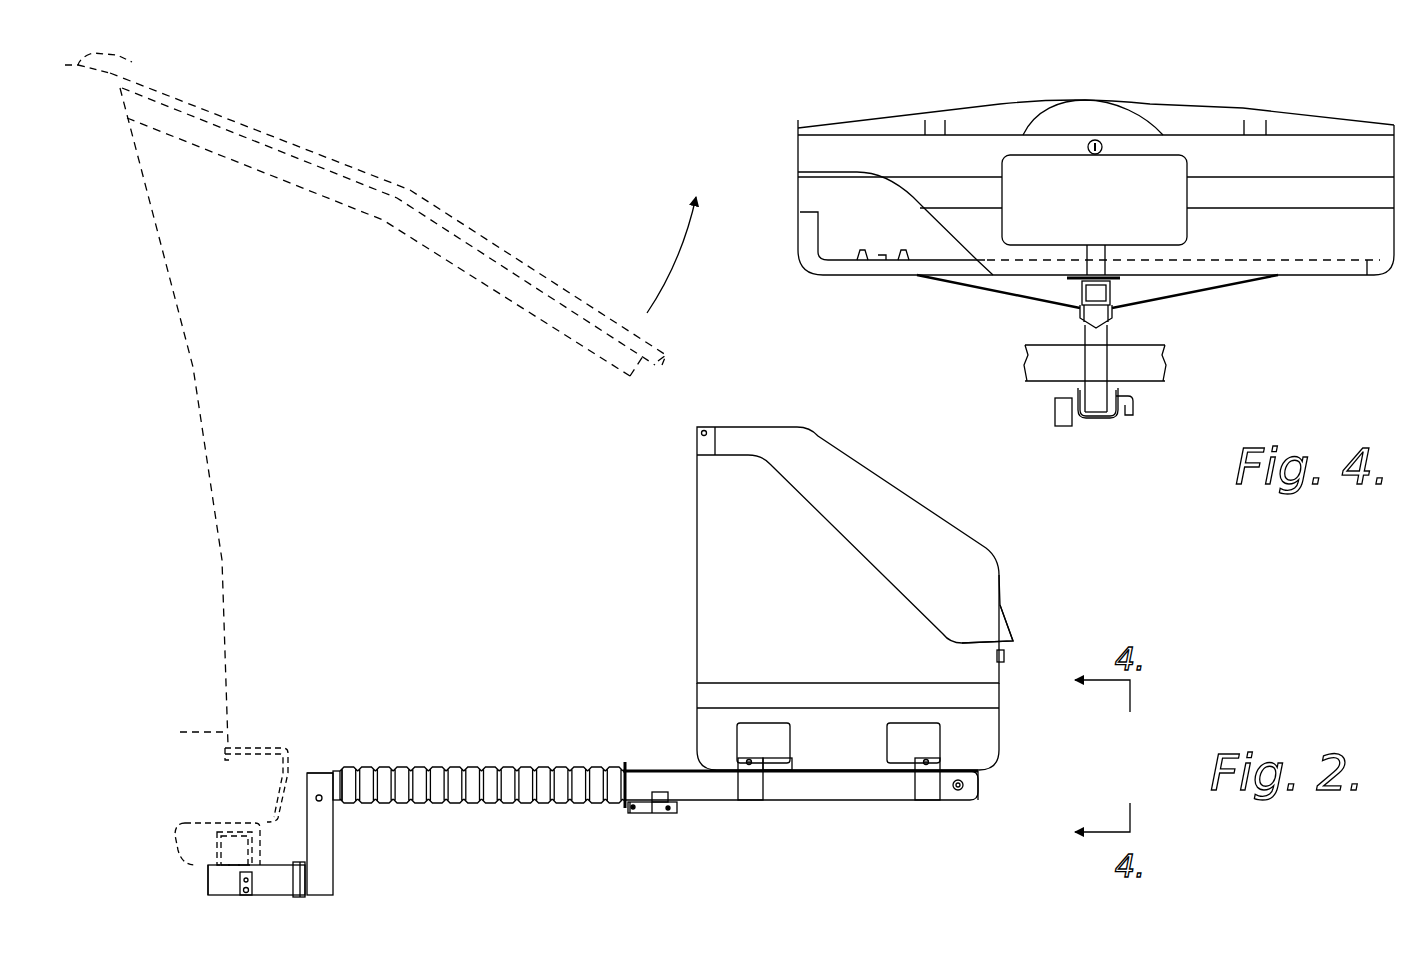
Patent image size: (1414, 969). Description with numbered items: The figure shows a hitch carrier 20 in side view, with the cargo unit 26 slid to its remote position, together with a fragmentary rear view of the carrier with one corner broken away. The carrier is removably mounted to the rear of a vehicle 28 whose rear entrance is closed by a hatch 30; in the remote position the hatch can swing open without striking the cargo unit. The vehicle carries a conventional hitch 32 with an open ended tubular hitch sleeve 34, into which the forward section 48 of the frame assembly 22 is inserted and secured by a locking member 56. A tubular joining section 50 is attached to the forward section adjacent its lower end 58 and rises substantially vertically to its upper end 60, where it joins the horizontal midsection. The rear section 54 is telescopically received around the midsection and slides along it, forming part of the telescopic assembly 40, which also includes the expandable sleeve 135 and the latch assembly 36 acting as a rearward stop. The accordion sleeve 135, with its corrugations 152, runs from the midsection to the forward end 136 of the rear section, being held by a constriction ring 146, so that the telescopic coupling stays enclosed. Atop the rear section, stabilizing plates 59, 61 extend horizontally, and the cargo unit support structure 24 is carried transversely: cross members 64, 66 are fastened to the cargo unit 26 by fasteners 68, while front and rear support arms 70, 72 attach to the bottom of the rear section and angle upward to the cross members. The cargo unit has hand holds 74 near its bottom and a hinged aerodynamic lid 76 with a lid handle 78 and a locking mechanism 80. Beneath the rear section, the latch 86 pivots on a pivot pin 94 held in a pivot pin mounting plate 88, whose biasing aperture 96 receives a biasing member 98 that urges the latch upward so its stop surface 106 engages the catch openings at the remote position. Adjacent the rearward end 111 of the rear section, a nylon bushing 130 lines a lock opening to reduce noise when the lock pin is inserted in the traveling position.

In FIG. 2, the hitch carrier 20 is at (618, 630).
In FIG. 2, the frame assembly 22 is at (305, 700).
In FIG. 4, the frame assembly 22 is at (1000, 360).
In FIG. 4, the cargo unit support structure 24 is at (935, 292).
In FIG. 2, the cargo unit 26 is at (848, 598).
In FIG. 4, the cargo unit 26 is at (1096, 197).
In FIG. 2, the vehicle 28 is at (128, 60).
In FIG. 2, the hatch 30 is at (413, 195).
In FIG. 2, the hitch 32 is at (178, 808).
In FIG. 2, the hitch sleeve 34 is at (213, 895).
In FIG. 4, the hitch sleeve 34 is at (1112, 425).
In FIG. 2, the latch assembly 36 is at (590, 875).
In FIG. 2, the telescopic assembly 40 is at (556, 735).
In FIG. 2, the forward section 48 is at (305, 895).
In FIG. 2, the joining section 50 is at (322, 850).
In FIG. 4, the joining section 50 is at (1100, 362).
In FIG. 2, the rear section 54 is at (875, 793).
In FIG. 2, the locking member 56 is at (247, 895).
In FIG. 4, the locking member 56 is at (1055, 412).
In FIG. 2, the lower end 58 is at (325, 885).
In FIG. 4, the lower end 58 is at (1100, 392).
In FIG. 4, the stabilizing plate 59 is at (1072, 290).
In FIG. 2, the upper end 60 is at (313, 775).
In FIG. 4, the stabilizing plate 61 is at (1112, 290).
In FIG. 2, the cross member 64 is at (770, 762).
In FIG. 2, the cross member 66 is at (907, 762).
In FIG. 4, the cross member 66 is at (855, 272).
In FIG. 2, the fasteners 68 is at (750, 763).
In FIG. 4, the fasteners 68 is at (885, 255).
In FIG. 2, the front support arm 70 is at (757, 790).
In FIG. 2, the rear support arm 72 is at (925, 797).
In FIG. 4, the rear support arm 72 is at (1200, 290).
In FIG. 2, the hand holds 74 is at (748, 740).
In FIG. 4, the hand holds 74 is at (815, 222).
In FIG. 2, the lid 76 is at (905, 478).
In FIG. 4, the lid 76 is at (1218, 112).
In FIG. 2, the lid handle 78 is at (1005, 628).
In FIG. 4, the lid handle 78 is at (1110, 115).
In FIG. 2, the locking mechanism 80 is at (1004, 655).
In FIG. 4, the locking mechanism 80 is at (1090, 140).
In FIG. 2, the latch 86 is at (673, 812).
In FIG. 2, the pivot pin mounting plate 88 is at (630, 813).
In FIG. 2, the pivot pin 94 is at (628, 808).
In FIG. 2, the biasing aperture 96 is at (675, 800).
In FIG. 2, the biasing member 98 is at (668, 812).
In FIG. 2, the stop surface 106 is at (677, 805).
In FIG. 2, the rearward end 111 is at (968, 795).
In FIG. 2, the nylon bushing 130 is at (965, 785).
In FIG. 2, the expandable sleeve 135 is at (383, 765).
In FIG. 2, the forward end 136 is at (632, 777).
In FIG. 2, the constriction ring 146 is at (337, 803).
In FIG. 2, the corrugations 152 is at (455, 767).